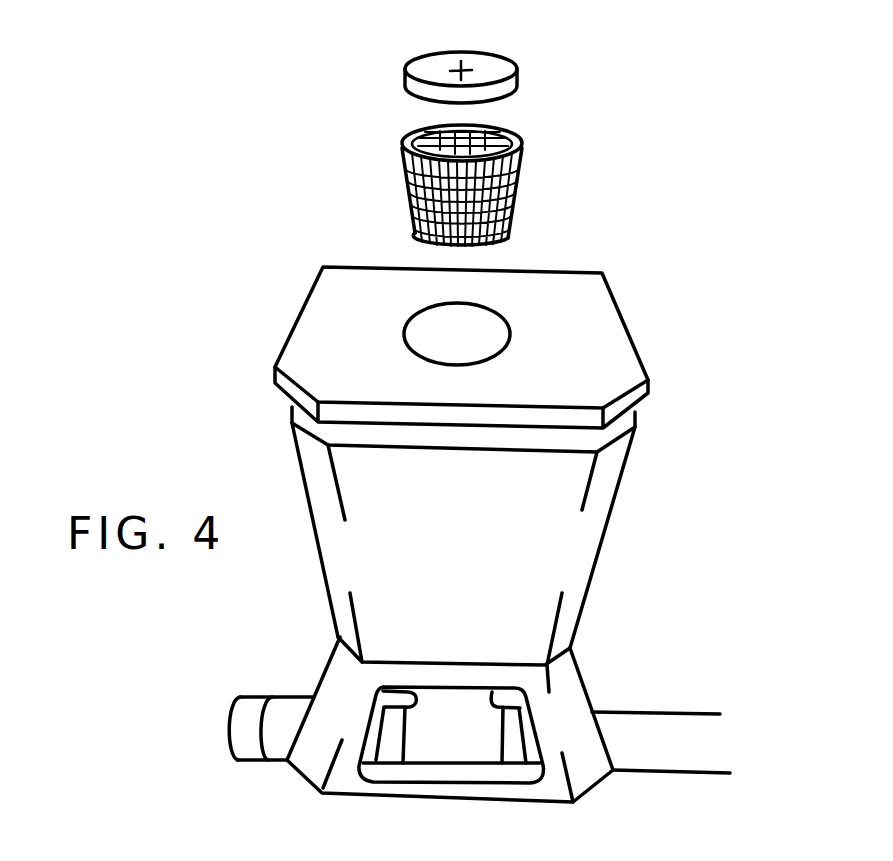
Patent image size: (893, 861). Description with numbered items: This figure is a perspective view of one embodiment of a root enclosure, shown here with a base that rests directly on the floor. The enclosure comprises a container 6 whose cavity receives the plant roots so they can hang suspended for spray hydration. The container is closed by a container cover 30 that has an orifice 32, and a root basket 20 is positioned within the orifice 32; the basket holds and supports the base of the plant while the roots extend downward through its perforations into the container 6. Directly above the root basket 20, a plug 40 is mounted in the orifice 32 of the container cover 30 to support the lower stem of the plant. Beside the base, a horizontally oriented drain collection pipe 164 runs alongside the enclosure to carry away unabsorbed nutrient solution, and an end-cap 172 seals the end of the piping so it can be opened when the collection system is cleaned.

The container 6 is at (615, 495).
The root basket 20 is at (517, 177).
The container cover 30 is at (485, 320).
The orifice 32 is at (465, 332).
The plug 40 is at (518, 73).
The drain collection pipe 164 is at (638, 727).
The end-cap 172 is at (253, 705).